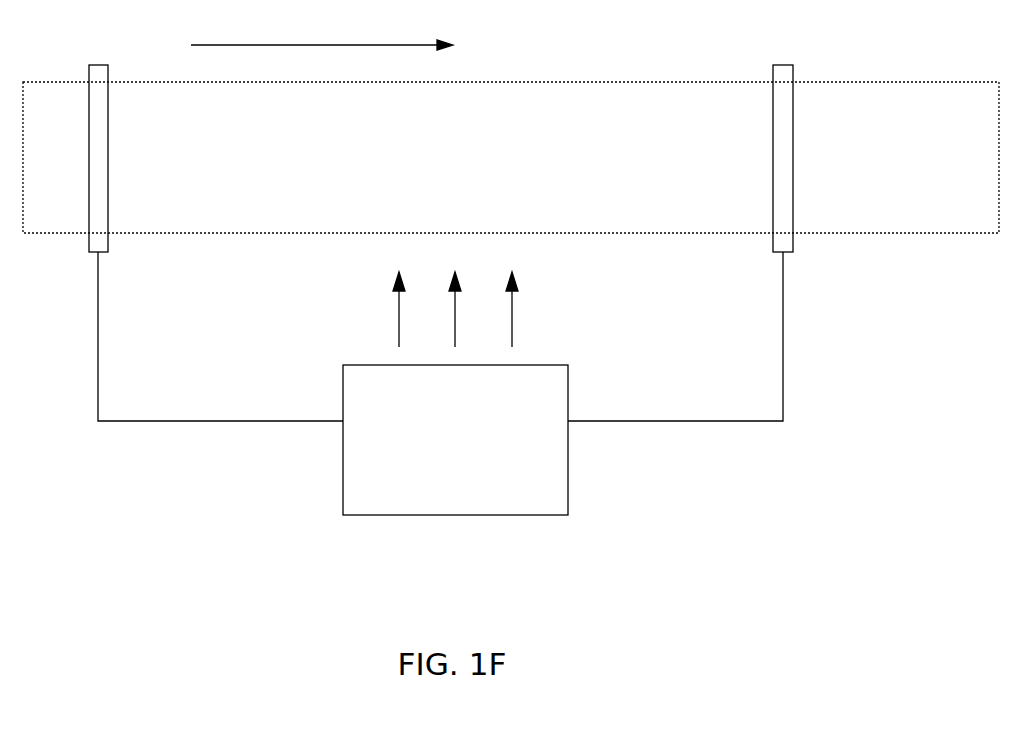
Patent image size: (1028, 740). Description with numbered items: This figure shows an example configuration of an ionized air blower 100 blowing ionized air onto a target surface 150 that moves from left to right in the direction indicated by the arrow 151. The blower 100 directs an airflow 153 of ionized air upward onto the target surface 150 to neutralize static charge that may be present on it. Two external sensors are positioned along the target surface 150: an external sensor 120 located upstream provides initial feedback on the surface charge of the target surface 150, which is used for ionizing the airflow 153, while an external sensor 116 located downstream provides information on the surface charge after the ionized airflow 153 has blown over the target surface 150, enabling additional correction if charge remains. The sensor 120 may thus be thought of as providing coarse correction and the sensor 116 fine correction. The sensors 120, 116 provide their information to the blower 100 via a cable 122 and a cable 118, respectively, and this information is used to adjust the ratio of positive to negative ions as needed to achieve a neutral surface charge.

The ionized air blower 100 is at (477, 452).
The external sensor 116 is at (798, 207).
The cable 118 is at (675, 336).
The external sensor 120 is at (114, 206).
The cable 122 is at (220, 336).
The target surface 150 is at (533, 170).
The arrow 151 is at (322, 31).
The airflow 153 is at (491, 309).